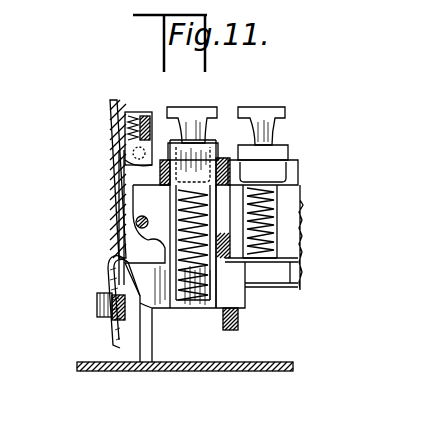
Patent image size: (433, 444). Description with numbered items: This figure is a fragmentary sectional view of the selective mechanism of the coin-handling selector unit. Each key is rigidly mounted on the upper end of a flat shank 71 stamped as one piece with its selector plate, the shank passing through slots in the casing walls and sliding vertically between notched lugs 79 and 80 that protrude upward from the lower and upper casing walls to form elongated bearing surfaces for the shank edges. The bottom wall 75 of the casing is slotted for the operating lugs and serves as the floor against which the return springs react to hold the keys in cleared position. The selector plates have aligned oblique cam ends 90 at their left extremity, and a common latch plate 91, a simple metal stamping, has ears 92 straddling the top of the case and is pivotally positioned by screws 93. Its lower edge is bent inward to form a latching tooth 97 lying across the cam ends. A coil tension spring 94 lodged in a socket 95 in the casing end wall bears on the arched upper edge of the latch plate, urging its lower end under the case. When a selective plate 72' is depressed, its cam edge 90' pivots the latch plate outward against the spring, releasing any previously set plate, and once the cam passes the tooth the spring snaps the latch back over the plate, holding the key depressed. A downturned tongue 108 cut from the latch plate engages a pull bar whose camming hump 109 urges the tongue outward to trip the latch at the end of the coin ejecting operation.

The flat shank 71 is at (172, 198).
The selective plate 72' is at (193, 244).
The bottom wall 75 is at (256, 262).
The notched lug 79 is at (222, 265).
The notched lug 80 is at (227, 148).
The oblique cam end 90 is at (185, 384).
The cam edge 90' is at (140, 353).
The latch plate 91 is at (110, 103).
The ears 92 is at (117, 150).
The screws 93 is at (133, 155).
The coil tension spring 94 is at (133, 122).
The socket 95 is at (135, 128).
The latching tooth 97 is at (118, 272).
The downturned tongue 108 is at (113, 336).
The camming hump 109 is at (97, 305).